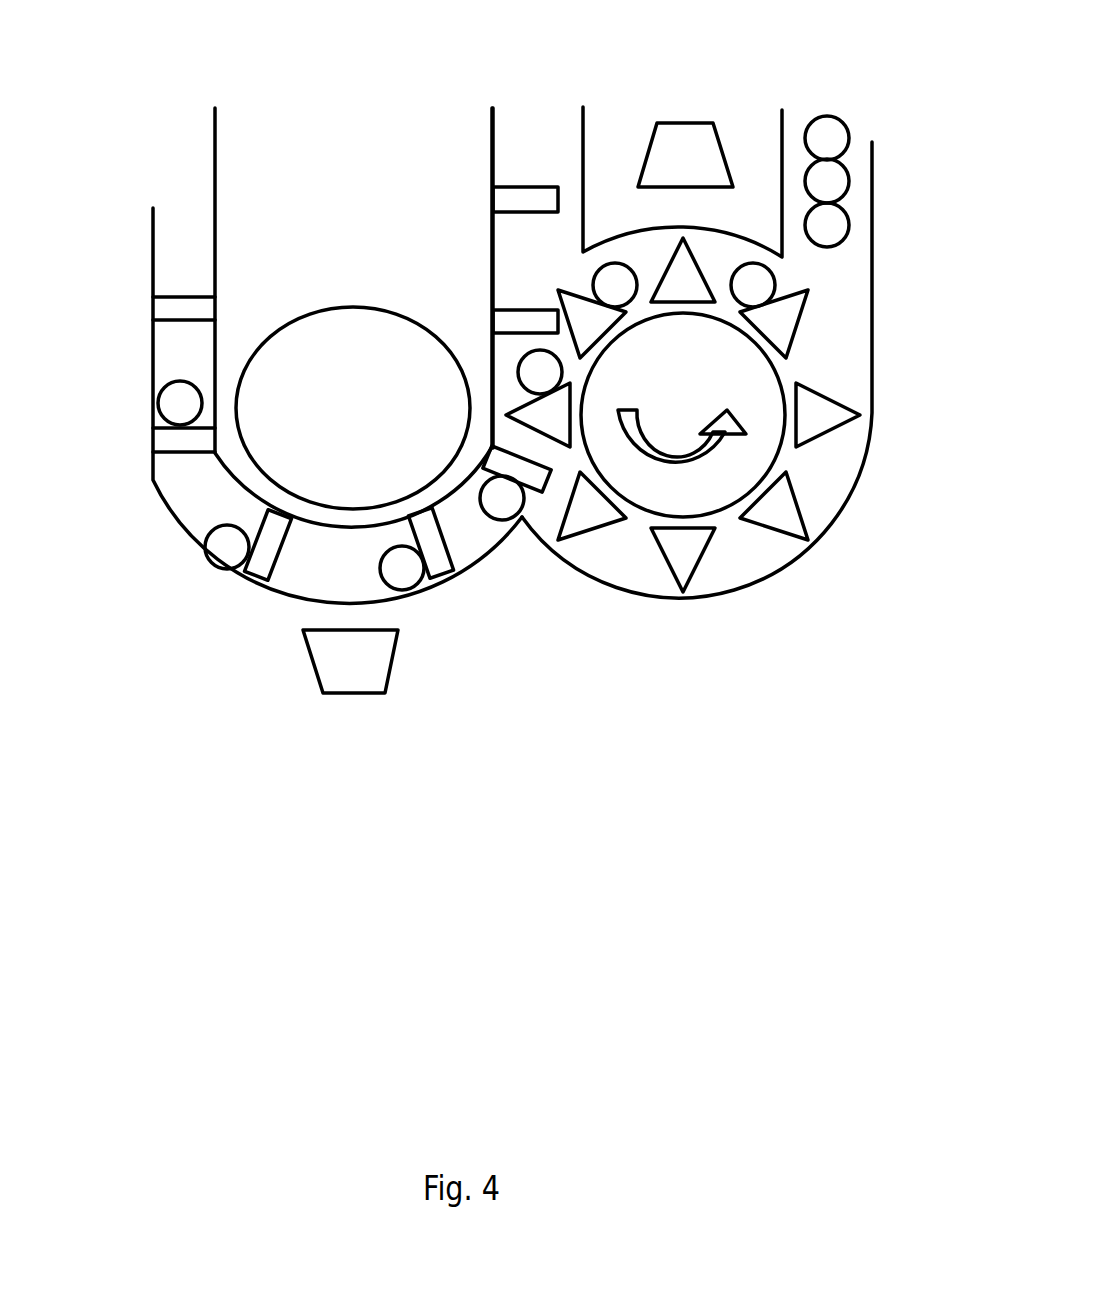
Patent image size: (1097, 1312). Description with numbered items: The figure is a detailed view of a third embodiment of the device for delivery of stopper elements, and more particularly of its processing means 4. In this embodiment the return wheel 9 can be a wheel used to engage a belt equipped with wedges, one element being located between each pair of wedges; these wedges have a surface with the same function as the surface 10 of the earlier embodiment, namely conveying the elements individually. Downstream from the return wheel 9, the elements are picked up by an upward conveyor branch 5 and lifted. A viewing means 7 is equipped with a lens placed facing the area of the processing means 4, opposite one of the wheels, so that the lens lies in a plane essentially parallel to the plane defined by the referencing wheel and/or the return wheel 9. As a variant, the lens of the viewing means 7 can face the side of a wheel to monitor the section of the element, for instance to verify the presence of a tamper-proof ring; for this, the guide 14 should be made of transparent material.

The processing means 4 is at (621, 627).
The upward conveyor branch 5 is at (184, 255).
The viewing means 7 is at (664, 190).
The return wheel 9 is at (296, 394).
The surface 10 is at (778, 364).
The guide 14 is at (476, 634).